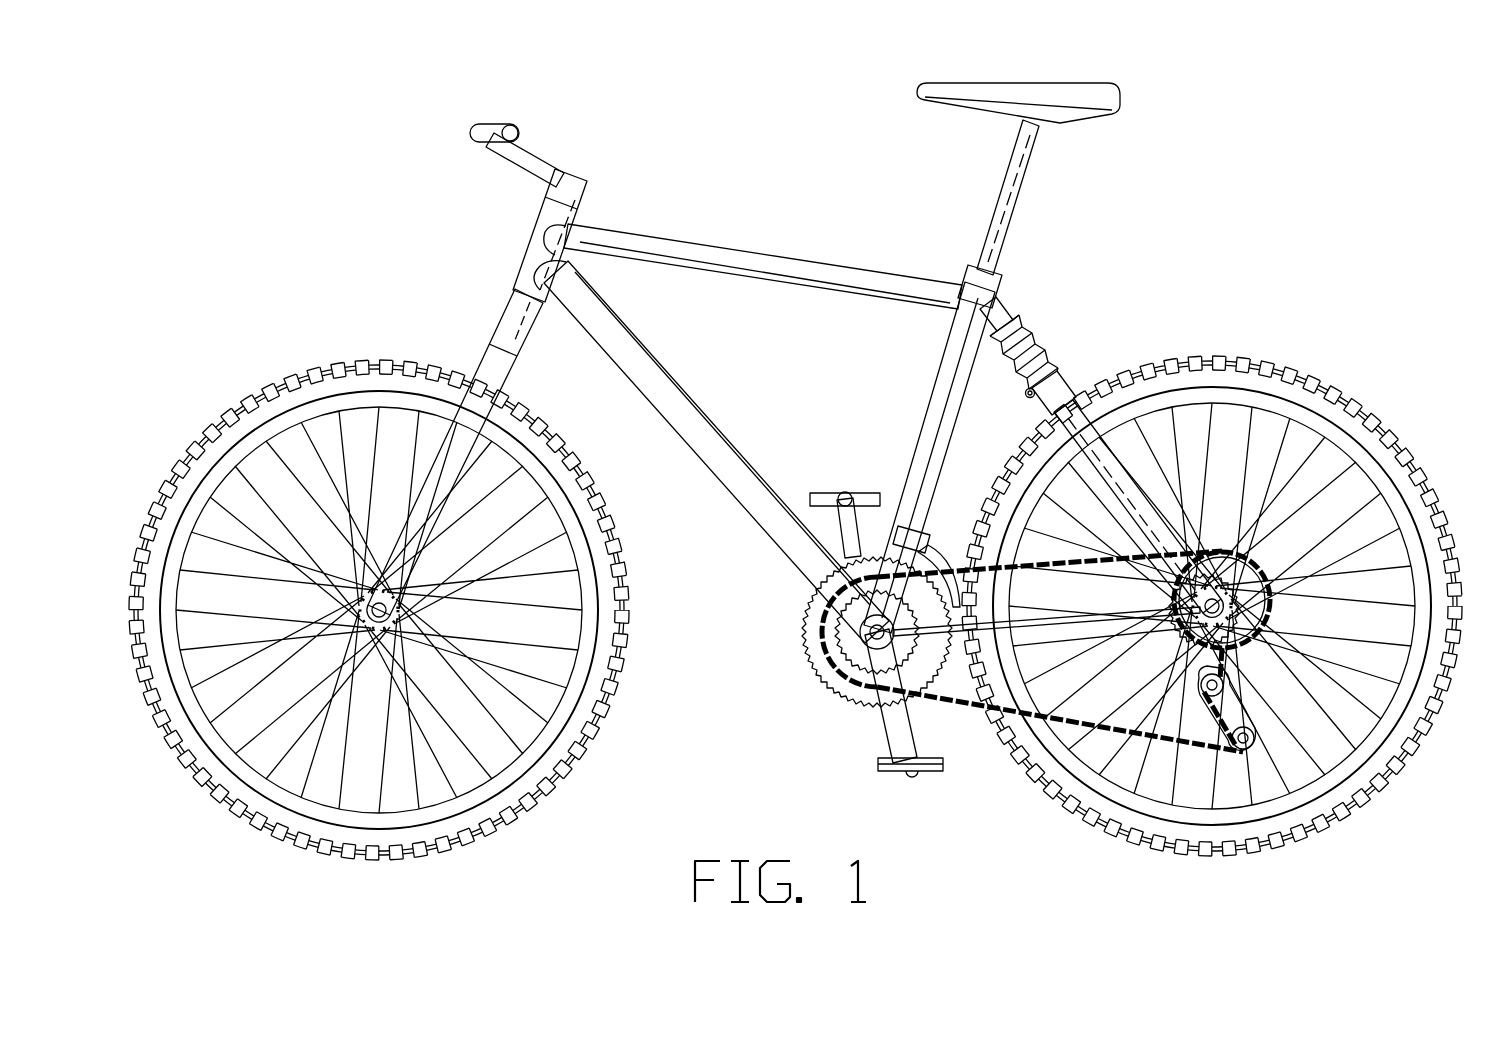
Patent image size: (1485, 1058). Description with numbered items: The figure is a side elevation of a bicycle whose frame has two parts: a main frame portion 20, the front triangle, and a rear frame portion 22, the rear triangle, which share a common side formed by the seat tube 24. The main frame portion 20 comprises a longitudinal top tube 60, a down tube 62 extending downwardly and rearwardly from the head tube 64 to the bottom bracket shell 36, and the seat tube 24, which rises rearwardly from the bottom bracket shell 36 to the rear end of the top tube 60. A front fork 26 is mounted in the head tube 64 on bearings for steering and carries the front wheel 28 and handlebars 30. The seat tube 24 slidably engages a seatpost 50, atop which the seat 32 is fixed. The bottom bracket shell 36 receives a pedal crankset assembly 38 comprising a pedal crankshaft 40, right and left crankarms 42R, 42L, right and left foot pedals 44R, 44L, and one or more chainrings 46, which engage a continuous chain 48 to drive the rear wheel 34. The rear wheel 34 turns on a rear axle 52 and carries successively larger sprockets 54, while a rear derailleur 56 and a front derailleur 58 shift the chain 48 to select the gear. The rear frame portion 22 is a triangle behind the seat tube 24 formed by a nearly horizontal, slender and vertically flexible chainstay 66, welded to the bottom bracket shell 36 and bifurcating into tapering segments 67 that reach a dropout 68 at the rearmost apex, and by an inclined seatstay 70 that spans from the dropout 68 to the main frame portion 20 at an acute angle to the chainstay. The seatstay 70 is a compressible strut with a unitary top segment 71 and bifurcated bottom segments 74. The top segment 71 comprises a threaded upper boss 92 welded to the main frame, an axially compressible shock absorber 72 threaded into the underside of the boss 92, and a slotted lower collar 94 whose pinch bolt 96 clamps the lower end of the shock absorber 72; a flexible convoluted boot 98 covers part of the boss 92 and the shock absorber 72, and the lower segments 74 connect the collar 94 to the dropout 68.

The main frame portion 20 is at (735, 185).
The rear frame portion 22 is at (1232, 295).
The seat tube 24 is at (938, 402).
The front fork 26 is at (488, 377).
The front wheel 28 is at (525, 443).
The handlebars 30 is at (508, 155).
The seat 32 is at (1052, 102).
The rear wheel 34 is at (1212, 597).
The bottom bracket shell 36 is at (832, 661).
The pedal crankset assembly 38 is at (785, 690).
The pedal crankshaft 40 is at (837, 687).
The left crankarm 42L is at (897, 703).
The right crankarm 42R is at (840, 528).
The left foot pedal 44L is at (923, 765).
The right foot pedal 44R is at (855, 492).
The chainrings 46 is at (798, 608).
The chain 48 is at (937, 700).
The seatpost 50 is at (1008, 195).
The rear axle 52 is at (1178, 630).
The sprockets 54 is at (1247, 574).
The rear derailleur 56 is at (1225, 698).
The front derailleur 58 is at (927, 563).
The top tube 60 is at (812, 284).
The down tube 62 is at (641, 364).
The head tube 64 is at (532, 282).
The chainstay 66 is at (992, 634).
The tapering segments 67 is at (1035, 648).
The dropout 68 is at (1270, 608).
The seatstay 70 is at (1215, 545).
The unitary top segment 71 is at (1005, 306).
The shock absorber 72 is at (985, 380).
The bifurcated bottom segments 74 is at (1158, 578).
The upper mount or boss 92 is at (990, 303).
The lower mount or collar 94 is at (1058, 382).
The pinch bolt 96 is at (1030, 397).
The boot 98 is at (965, 382).